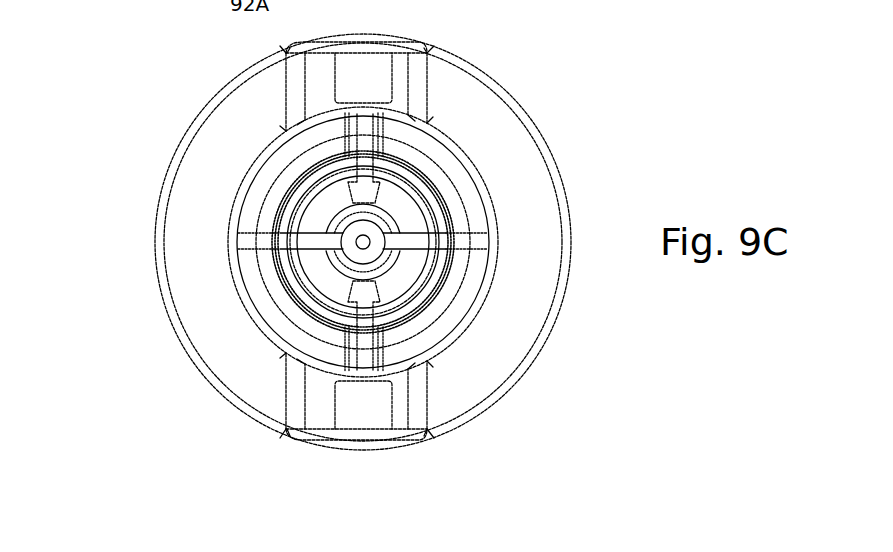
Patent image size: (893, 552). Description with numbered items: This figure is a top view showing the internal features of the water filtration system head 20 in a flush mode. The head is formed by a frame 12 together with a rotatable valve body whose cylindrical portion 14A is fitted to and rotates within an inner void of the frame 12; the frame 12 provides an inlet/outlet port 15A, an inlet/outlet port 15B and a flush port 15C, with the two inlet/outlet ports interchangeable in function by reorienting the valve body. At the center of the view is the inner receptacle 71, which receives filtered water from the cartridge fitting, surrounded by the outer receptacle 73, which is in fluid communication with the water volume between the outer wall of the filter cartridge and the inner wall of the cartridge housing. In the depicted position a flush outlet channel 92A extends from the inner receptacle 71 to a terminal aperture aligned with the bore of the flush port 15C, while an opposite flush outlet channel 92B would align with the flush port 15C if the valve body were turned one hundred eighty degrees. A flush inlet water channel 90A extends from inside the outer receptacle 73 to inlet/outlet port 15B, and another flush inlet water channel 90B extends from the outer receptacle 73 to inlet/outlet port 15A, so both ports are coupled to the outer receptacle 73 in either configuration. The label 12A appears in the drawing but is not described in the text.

The frame 12 is at (562, 305).
The housing inner wall 12A is at (453, 243).
The cylindrical portion 14A is at (438, 208).
The inlet/outlet port 15A is at (362, 449).
The inlet/outlet port 15B is at (366, 33).
The flush port 15C is at (240, 247).
The water filtration system head 20 is at (557, 64).
The inner receptacle 71 is at (345, 220).
The outer receptacle 73 is at (323, 298).
The flush inlet water channel 90A is at (363, 190).
The flush inlet water channel 90B is at (363, 300).
The flush outlet channel 92A is at (300, 245).
The flush outlet channel 92B is at (417, 240).